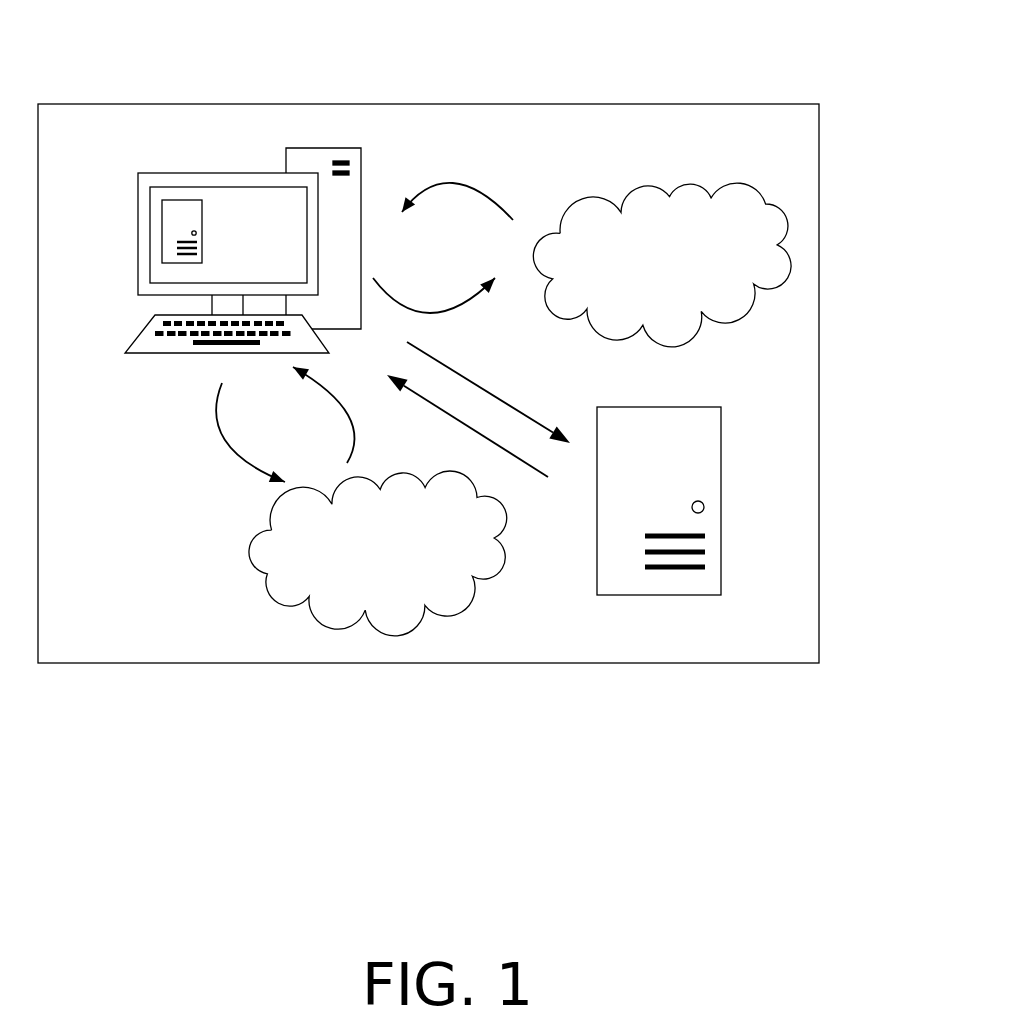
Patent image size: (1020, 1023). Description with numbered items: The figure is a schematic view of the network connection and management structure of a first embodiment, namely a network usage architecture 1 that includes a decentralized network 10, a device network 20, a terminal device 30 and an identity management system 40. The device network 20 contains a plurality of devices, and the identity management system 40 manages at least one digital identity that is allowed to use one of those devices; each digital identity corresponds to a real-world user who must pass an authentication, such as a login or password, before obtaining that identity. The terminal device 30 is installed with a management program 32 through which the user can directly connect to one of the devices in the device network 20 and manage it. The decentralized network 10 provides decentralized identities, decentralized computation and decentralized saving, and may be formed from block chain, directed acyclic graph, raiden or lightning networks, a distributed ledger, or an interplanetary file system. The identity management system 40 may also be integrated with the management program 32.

The network usage architecture 1 is at (712, 135).
The decentralized network 10 is at (288, 603).
The device network 20 is at (772, 269).
The terminal device 30 is at (204, 184).
The management program 32 is at (187, 213).
The identity management system 40 is at (628, 582).